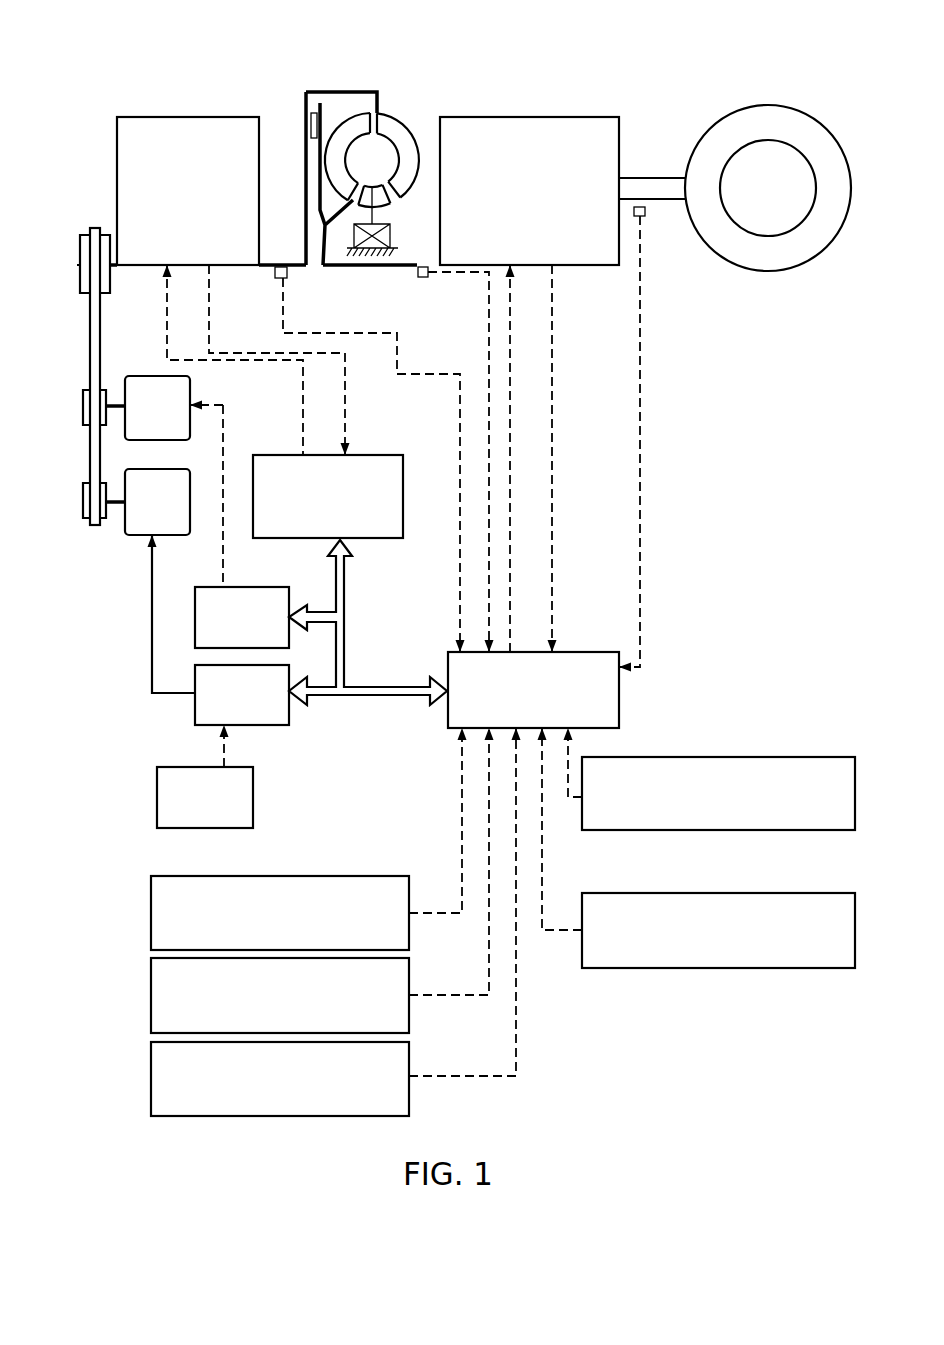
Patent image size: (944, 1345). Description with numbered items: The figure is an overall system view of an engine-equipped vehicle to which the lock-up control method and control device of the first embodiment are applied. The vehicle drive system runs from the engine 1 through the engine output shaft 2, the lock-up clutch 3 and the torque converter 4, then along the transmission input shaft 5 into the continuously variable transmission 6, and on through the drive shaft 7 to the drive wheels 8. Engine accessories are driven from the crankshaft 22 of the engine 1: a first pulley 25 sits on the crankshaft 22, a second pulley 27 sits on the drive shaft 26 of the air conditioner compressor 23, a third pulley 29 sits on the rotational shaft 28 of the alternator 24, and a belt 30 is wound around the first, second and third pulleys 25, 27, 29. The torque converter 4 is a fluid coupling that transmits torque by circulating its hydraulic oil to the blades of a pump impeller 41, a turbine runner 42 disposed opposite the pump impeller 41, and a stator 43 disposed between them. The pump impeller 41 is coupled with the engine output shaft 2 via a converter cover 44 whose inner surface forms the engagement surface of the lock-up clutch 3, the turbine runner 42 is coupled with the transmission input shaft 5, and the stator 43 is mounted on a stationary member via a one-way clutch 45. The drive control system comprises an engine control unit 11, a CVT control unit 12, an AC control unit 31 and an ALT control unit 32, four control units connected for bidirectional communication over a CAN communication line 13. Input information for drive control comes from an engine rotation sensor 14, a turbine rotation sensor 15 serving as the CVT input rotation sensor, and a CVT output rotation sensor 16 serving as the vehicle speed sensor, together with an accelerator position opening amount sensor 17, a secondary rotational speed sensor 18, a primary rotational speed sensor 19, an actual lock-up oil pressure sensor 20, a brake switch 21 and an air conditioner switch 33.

The engine 1 is at (188, 117).
The engine output shaft 2 is at (268, 262).
The lock-up clutch 3 is at (313, 125).
The torque converter 4 is at (320, 92).
The transmission input shaft 5 is at (413, 260).
The continuously variable transmission 6 is at (527, 117).
The drive shaft 7 is at (657, 175).
The drive wheels 8 is at (770, 105).
The engine control unit 11 is at (275, 455).
The CVT control unit 12 is at (591, 652).
The CAN communication line 13 is at (328, 697).
The engine rotation sensor 14 is at (275, 273).
The turbine rotation sensor 15 is at (425, 278).
The CVT output rotation sensor 16 is at (645, 212).
The accelerator position opening amount sensor 17 is at (750, 757).
The secondary rotational speed sensor 18 is at (151, 913).
The primary rotational speed sensor 19 is at (151, 995).
The actual lock-up oil pressure sensor 20 is at (750, 893).
The brake switch 21 is at (151, 1076).
The crankshaft 22 is at (113, 268).
The air conditioner compressor 23 is at (150, 469).
The alternator 24 is at (148, 376).
The first pulley 25 is at (80, 250).
The drive shaft 26 is at (115, 504).
The second pulley 27 is at (83, 502).
The rotational shaft 28 is at (115, 408).
The third pulley 29 is at (83, 410).
The belt 30 is at (90, 340).
The AC control unit 31 is at (195, 712).
The ALT control unit 32 is at (208, 587).
The air conditioner switch 33 is at (157, 800).
The pump impeller 41 is at (402, 140).
The turbine runner 42 is at (350, 128).
The stator 43 is at (358, 198).
The converter cover 44 is at (306, 172).
The one-way clutch 45 is at (390, 236).